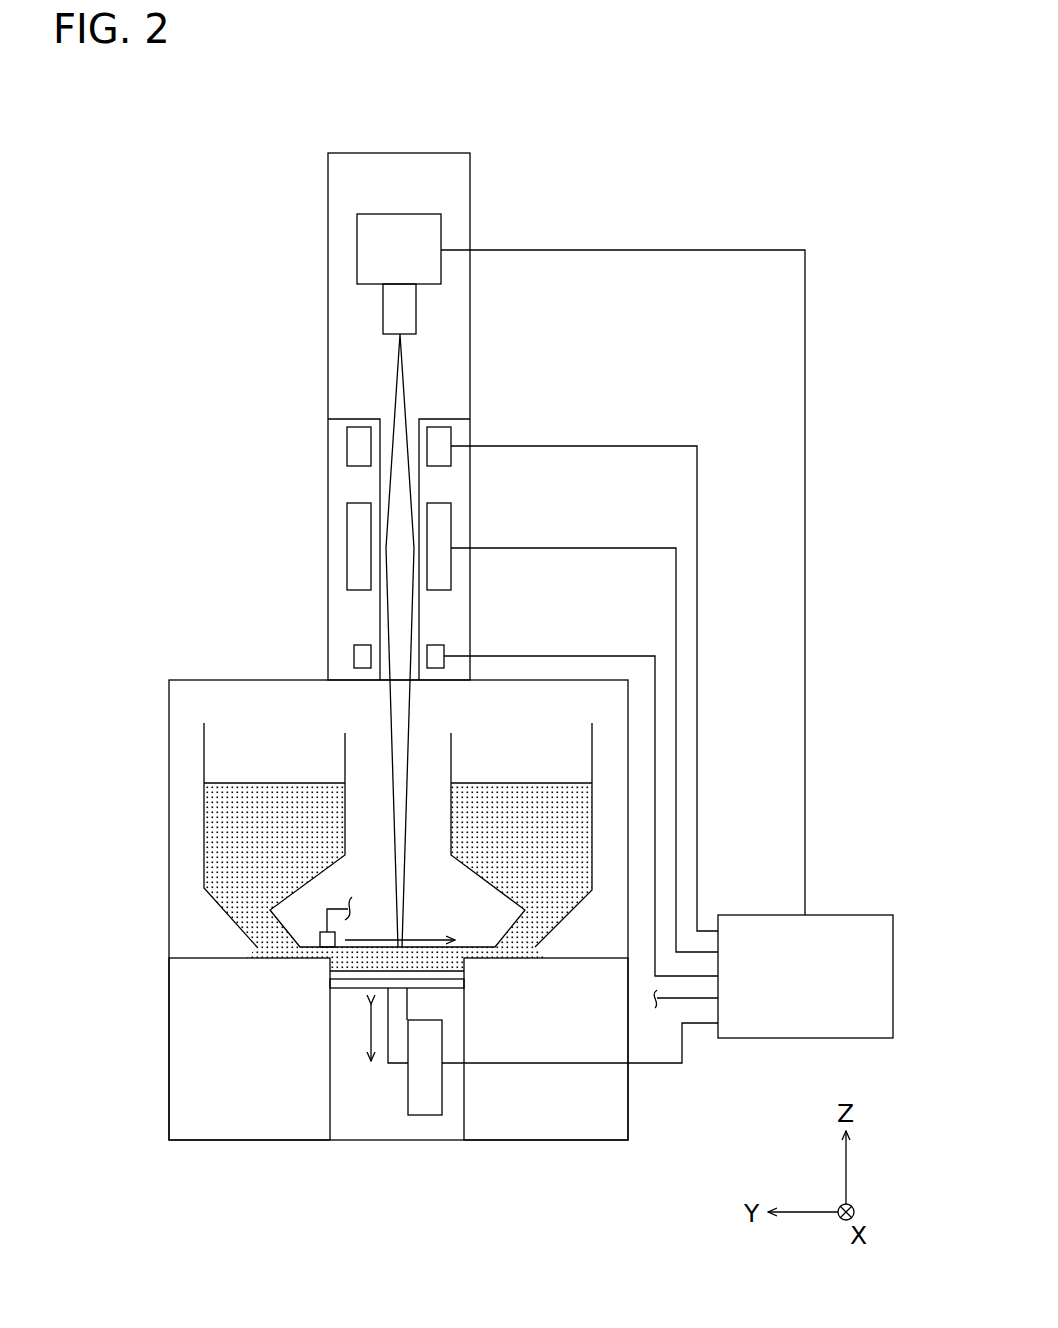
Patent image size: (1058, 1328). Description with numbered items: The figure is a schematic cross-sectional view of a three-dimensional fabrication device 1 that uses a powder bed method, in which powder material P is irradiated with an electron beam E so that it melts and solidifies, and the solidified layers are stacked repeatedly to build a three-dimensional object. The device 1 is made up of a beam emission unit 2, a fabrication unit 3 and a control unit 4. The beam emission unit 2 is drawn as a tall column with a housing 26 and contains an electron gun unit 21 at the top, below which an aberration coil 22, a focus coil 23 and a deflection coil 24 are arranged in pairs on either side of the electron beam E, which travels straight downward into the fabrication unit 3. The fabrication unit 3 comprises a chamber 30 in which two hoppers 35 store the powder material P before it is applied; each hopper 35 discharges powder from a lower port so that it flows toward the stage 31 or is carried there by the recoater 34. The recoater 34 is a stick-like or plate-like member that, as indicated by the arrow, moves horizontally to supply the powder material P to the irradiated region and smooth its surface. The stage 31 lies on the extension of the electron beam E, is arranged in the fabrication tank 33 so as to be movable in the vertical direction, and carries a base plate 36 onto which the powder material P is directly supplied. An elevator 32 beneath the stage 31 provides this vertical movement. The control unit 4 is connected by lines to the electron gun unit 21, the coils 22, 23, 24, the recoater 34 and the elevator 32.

The three-dimensional fabrication device 1 is at (682, 113).
The beam emission unit 2 is at (328, 166).
The housing 26 is at (328, 206).
The electron gun unit 21 is at (357, 243).
The aberration coil 22 is at (451, 440).
The focus coil 23 is at (451, 520).
The deflection coil 24 is at (444, 655).
The electron beam E is at (395, 700).
The fabrication unit 3 is at (169, 697).
The chamber 30 is at (169, 826).
The hopper 35 is at (204, 751).
The recoater 34 is at (320, 940).
The powder material P is at (458, 950).
The stage 31 is at (330, 1008).
The base plate 36 is at (464, 972).
The fabrication tank 33 is at (464, 1022).
The elevator 32 is at (442, 1092).
The control unit 4 is at (857, 915).